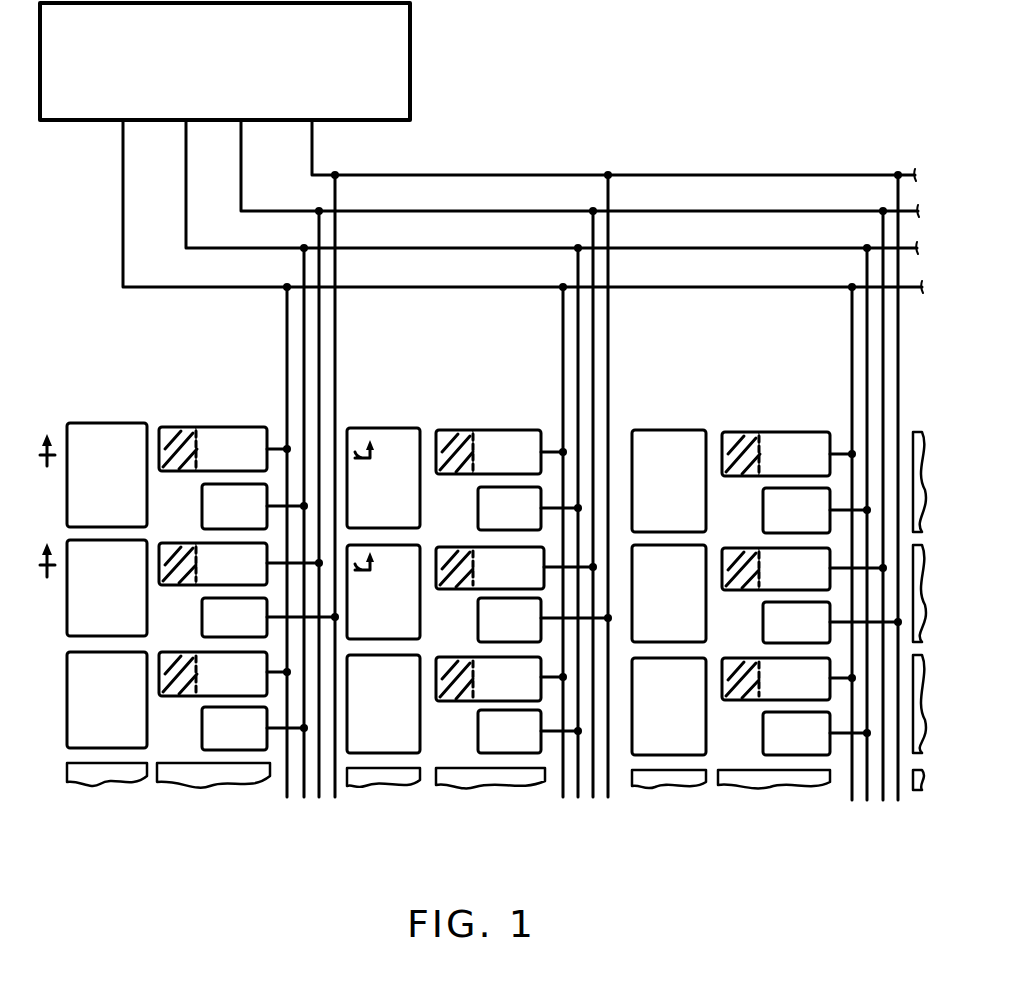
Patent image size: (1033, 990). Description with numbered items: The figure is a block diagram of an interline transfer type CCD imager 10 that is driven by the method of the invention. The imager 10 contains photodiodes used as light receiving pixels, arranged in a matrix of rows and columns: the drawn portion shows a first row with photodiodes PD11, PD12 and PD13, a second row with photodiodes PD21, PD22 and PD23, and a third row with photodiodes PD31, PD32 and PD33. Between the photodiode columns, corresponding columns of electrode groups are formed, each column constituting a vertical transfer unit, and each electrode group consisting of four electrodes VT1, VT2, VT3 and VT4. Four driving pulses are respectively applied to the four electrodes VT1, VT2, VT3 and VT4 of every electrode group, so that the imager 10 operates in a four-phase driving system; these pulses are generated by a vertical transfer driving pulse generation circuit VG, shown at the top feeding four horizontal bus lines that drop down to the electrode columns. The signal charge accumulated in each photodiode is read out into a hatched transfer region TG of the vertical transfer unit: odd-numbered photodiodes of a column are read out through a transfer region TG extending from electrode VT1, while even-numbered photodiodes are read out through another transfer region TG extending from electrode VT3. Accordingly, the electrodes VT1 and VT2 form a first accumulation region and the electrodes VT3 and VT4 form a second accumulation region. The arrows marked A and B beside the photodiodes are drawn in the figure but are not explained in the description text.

The interline transfer type CCD imager 10 is at (578, 119).
The vertical transfer driving pulse generation circuit VG is at (412, 54).
The transfer region TG is at (795, 430).
The electrode VT1 is at (507, 564).
The electrode VT2 is at (536, 619).
The electrode VT3 is at (523, 566).
The electrode VT4 is at (552, 620).
The photodiode PD11 is at (107, 475).
The photodiode PD12 is at (383, 478).
The photodiode PD13 is at (669, 481).
The photodiode PD21 is at (107, 588).
The photodiode PD22 is at (383, 592).
The photodiode PD23 is at (669, 593).
The photodiode PD31 is at (107, 700).
The photodiode PD32 is at (383, 704).
The photodiode PD33 is at (669, 706).
The field A readout direction A is at (216, 467).
The field B readout direction B is at (216, 576).